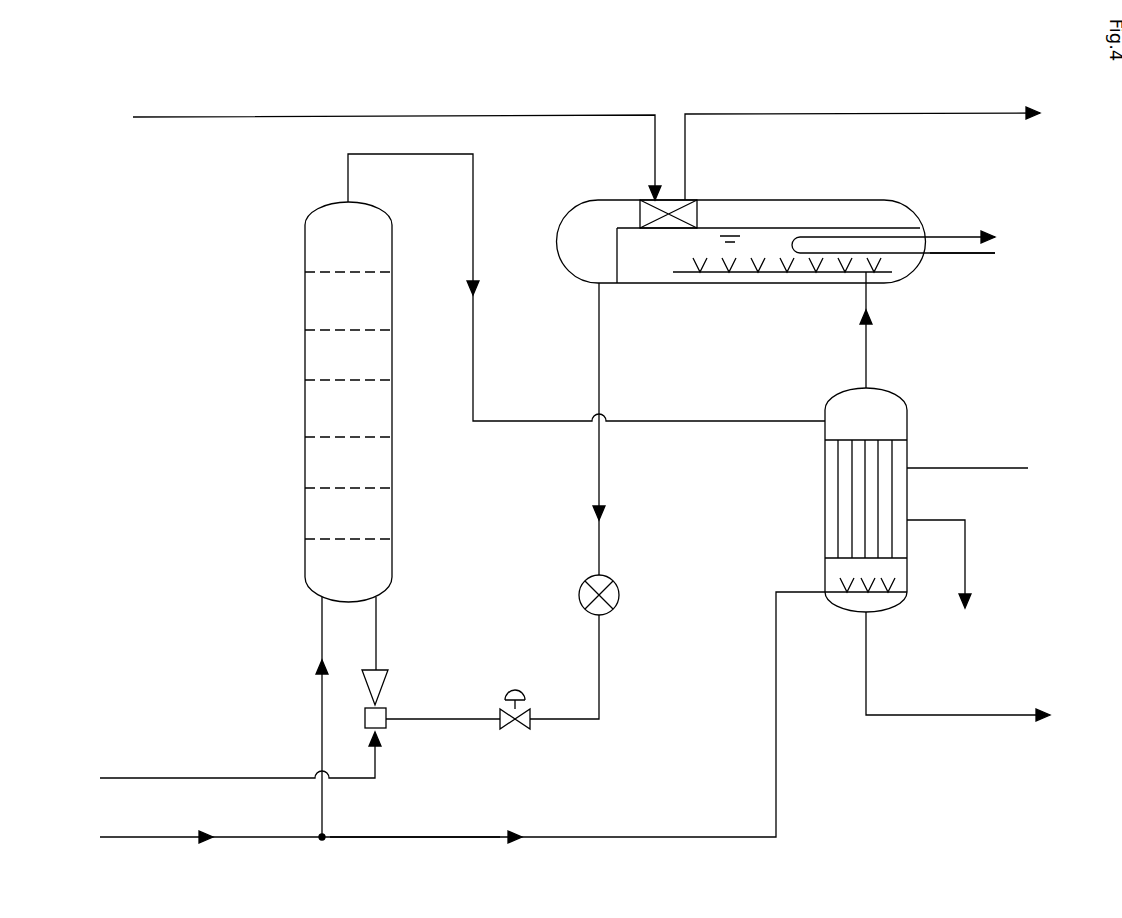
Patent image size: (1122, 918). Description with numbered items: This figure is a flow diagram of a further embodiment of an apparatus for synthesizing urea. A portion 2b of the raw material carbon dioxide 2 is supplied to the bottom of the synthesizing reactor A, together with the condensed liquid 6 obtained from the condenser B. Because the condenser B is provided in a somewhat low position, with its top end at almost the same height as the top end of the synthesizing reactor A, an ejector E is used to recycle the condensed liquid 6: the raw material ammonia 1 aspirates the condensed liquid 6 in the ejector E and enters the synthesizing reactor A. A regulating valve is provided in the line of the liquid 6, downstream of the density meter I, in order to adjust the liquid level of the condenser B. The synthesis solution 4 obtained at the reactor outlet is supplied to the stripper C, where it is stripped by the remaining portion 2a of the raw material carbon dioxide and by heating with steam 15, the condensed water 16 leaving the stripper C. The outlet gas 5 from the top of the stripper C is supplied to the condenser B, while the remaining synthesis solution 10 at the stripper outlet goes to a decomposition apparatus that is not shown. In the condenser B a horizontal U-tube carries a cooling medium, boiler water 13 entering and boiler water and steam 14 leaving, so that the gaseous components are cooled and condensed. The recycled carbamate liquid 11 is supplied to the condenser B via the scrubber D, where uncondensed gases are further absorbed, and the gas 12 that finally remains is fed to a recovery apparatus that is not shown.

The raw material ammonia 1 is at (197, 778).
The raw material carbon dioxide 2 is at (197, 836).
The remaining portion of raw material carbon dioxide 2a is at (435, 836).
The portion of raw material carbon dioxide 2b is at (320, 705).
The synthesis solution at synthesis reactor outlet 4 is at (512, 421).
The outlet gas at stripper top 5 is at (868, 350).
The liquid obtained from condenser 6 is at (600, 683).
The liquid at stripper outlet 10 is at (965, 713).
The recycled carbamate liquid 11 is at (240, 116).
The gas obtained from condenser 12 is at (912, 113).
The cooling medium at condenser inlet 13 is at (968, 255).
The cooling medium at condenser outlet 14 is at (962, 237).
The steam for stripper heating 15 is at (983, 468).
The condensed water at stripper outlet 16 is at (958, 520).
The synthesizing reactor A is at (385, 246).
The condenser B is at (845, 200).
The stripper C is at (902, 418).
The scrubber D is at (697, 200).
The ejector E is at (380, 695).
The density meter I is at (620, 586).